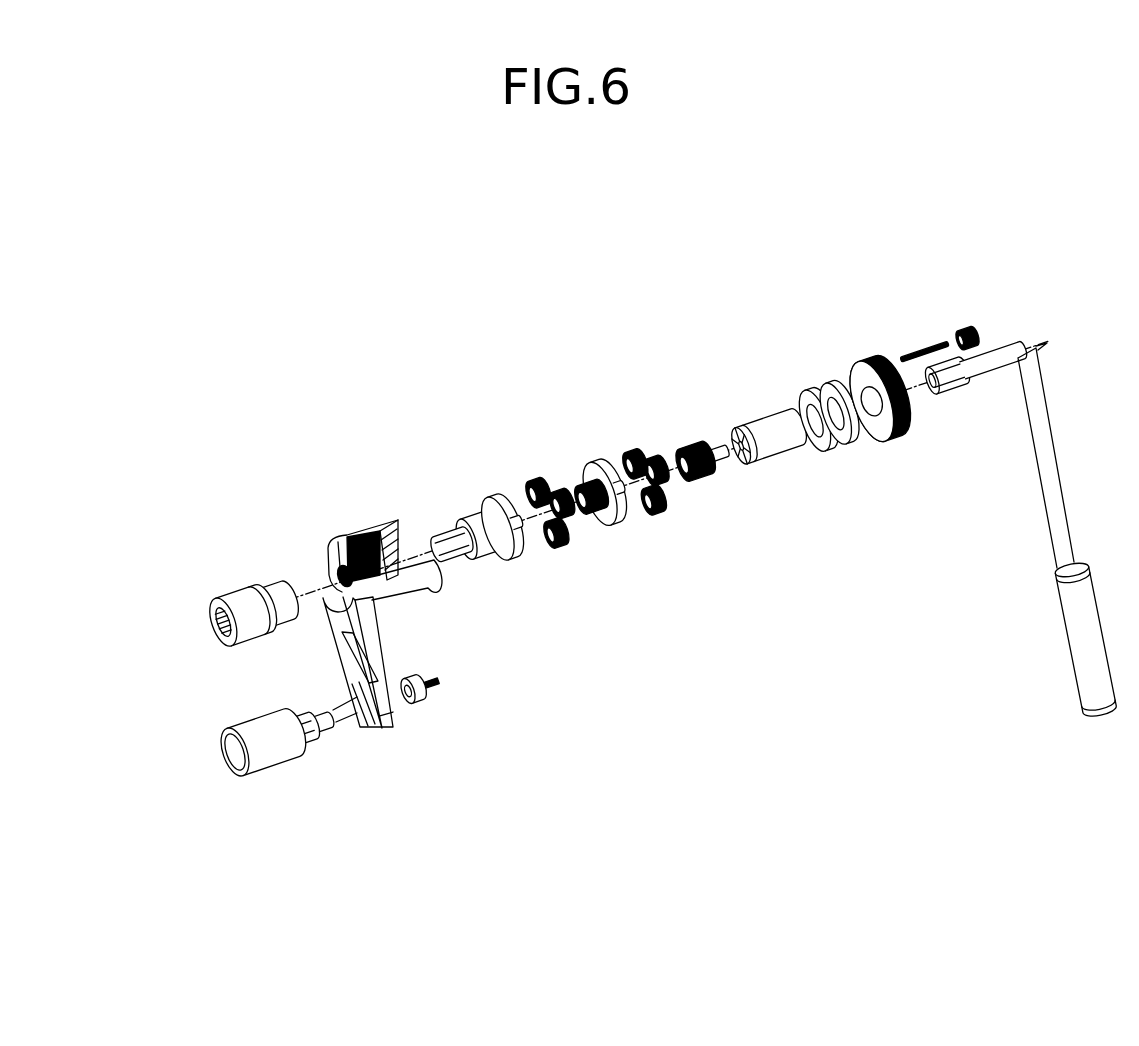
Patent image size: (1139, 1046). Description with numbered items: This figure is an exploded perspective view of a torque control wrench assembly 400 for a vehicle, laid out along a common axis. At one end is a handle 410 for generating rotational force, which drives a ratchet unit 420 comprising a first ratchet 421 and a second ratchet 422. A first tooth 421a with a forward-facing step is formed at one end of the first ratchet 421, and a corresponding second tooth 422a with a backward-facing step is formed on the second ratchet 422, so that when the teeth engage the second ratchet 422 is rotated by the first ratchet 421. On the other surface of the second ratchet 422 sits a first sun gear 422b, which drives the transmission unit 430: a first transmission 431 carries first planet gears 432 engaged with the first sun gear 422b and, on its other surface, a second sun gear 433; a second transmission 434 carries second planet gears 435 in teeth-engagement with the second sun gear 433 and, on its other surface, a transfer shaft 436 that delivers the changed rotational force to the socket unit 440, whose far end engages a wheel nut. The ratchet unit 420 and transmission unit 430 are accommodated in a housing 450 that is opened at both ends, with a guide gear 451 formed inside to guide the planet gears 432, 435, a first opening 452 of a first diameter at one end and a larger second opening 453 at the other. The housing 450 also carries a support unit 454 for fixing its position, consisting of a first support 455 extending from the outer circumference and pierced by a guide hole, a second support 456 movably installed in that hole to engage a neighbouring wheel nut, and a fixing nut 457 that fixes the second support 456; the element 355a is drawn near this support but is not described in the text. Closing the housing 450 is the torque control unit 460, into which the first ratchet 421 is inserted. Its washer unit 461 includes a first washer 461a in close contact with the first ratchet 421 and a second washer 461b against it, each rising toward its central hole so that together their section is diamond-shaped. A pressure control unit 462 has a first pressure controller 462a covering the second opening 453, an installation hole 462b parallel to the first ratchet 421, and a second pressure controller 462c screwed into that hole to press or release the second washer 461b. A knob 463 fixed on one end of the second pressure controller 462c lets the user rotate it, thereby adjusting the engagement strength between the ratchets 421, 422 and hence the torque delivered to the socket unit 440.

The torque control wrench assembly 400 is at (582, 259).
The handle 410 is at (1080, 660).
The ratchet unit 420 is at (772, 318).
The first ratchet 421 is at (770, 437).
The first tooth 421a is at (750, 427).
The second ratchet 422 is at (667, 352).
The second tooth 422a is at (715, 447).
The first sun gear 422b is at (693, 447).
The transmission unit 430 is at (668, 577).
The first transmission 431 is at (617, 520).
The first planet gears 432 is at (658, 518).
The second sun gear 433 is at (595, 520).
The second transmission 434 is at (508, 556).
The second planet gears 435 is at (558, 548).
The transfer shaft 436 is at (480, 546).
The socket unit 440 is at (244, 599).
The housing 450 is at (352, 536).
The guide gear 451 is at (378, 550).
The first opening 452 is at (340, 578).
The second opening 453 is at (402, 547).
The support unit 454 is at (350, 836).
The first support 455 is at (382, 735).
The second support 456 is at (263, 750).
The fixing nut 457 is at (416, 705).
The pin 355a is at (350, 708).
The torque control unit 460 is at (835, 562).
The washer unit 461 is at (865, 533).
The first washer 461a is at (812, 444).
The second washer 461b is at (847, 440).
The pressure control unit 462 is at (980, 533).
The first pressure controller 462a is at (903, 395).
The installation hole 462b is at (857, 392).
The second pressure controller 462c is at (920, 360).
The knob 463 is at (970, 350).